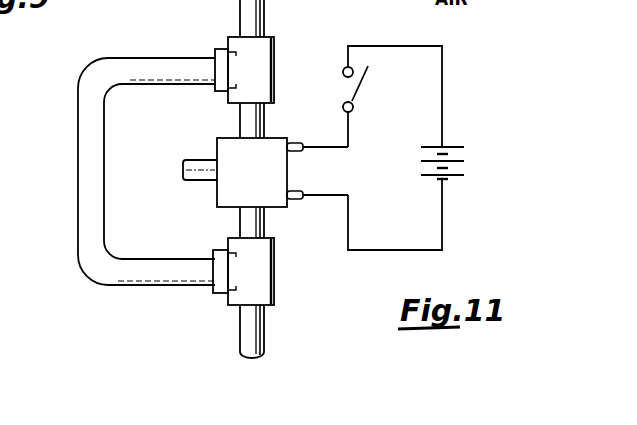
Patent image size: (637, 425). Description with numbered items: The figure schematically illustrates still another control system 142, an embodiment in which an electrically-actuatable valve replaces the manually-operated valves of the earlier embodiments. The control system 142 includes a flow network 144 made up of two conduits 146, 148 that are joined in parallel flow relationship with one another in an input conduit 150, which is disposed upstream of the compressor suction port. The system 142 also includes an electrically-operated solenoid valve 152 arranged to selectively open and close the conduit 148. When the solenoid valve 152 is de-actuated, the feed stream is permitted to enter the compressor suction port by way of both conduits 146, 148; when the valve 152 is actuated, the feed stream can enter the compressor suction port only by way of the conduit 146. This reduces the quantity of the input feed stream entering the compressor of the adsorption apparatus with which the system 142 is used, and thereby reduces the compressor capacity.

The control system 142 is at (275, 32).
The flow network 144 is at (112, 163).
The conduit 146 is at (77, 125).
The conduit 148 is at (245, 122).
The input conduit 150 is at (265, 318).
The solenoid valve 152 is at (217, 197).